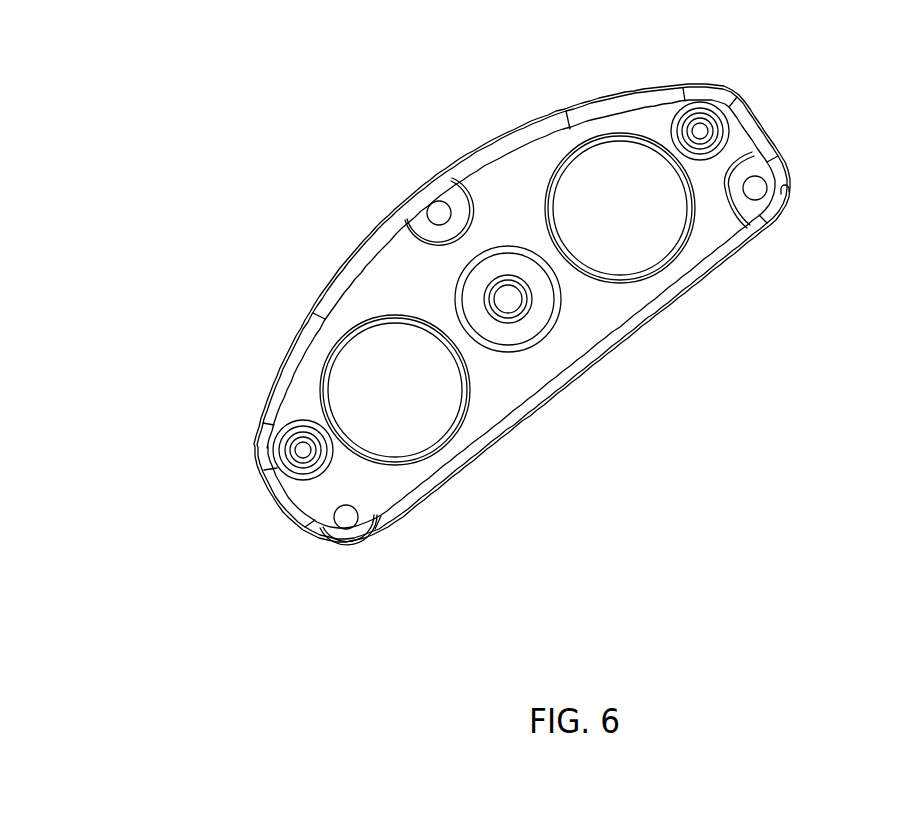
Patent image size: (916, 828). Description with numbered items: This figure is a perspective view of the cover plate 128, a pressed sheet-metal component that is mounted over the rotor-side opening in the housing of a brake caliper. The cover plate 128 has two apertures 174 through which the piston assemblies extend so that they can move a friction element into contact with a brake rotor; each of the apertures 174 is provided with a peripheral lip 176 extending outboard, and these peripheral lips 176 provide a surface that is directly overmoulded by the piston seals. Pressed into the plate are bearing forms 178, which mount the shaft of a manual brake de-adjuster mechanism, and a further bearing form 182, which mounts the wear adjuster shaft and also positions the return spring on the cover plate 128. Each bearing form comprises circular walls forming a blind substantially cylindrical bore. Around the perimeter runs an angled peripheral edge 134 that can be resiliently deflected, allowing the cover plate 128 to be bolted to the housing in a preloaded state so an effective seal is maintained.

The cover plate 128 is at (527, 153).
The angled peripheral edge 134 is at (785, 188).
The apertures 174 is at (646, 269).
The peripheral lips 176 is at (697, 232).
The bearing forms 178 is at (702, 132).
The bearing form 182 is at (510, 307).